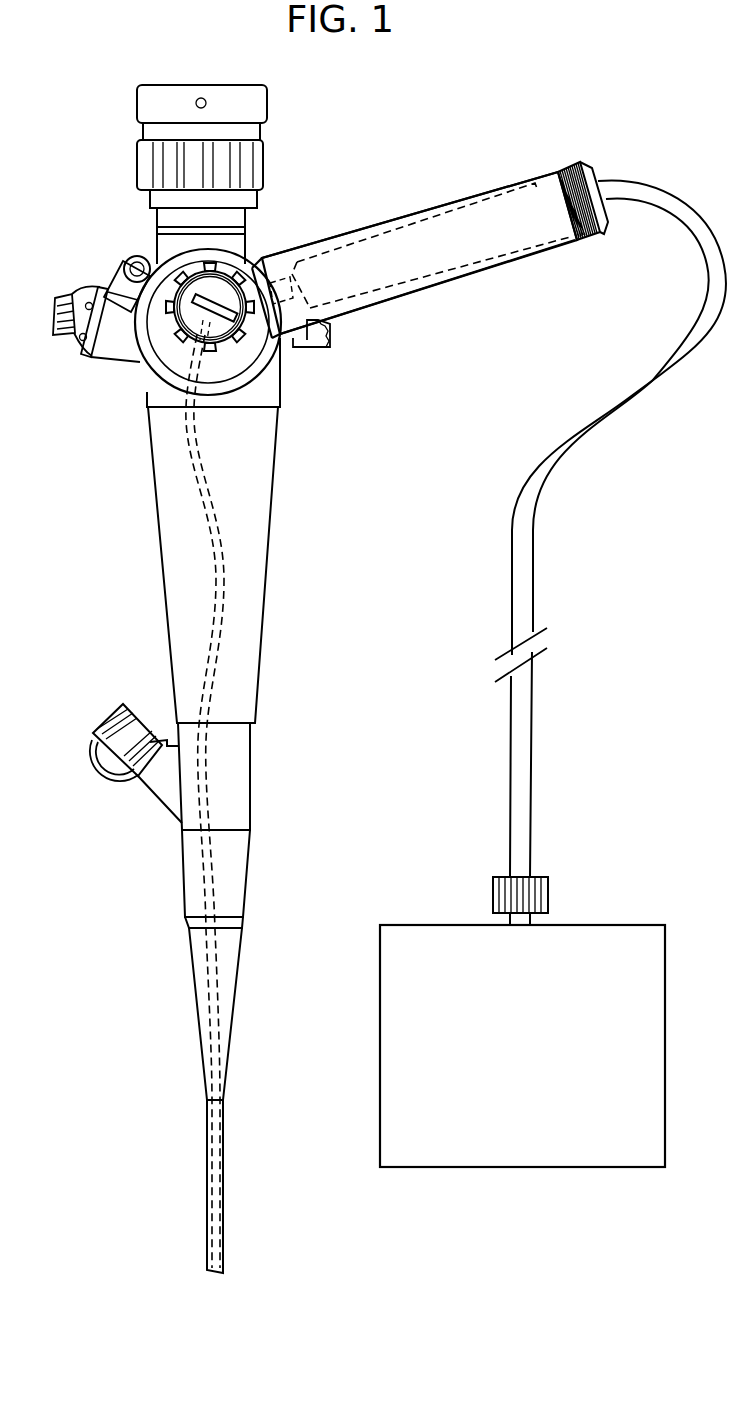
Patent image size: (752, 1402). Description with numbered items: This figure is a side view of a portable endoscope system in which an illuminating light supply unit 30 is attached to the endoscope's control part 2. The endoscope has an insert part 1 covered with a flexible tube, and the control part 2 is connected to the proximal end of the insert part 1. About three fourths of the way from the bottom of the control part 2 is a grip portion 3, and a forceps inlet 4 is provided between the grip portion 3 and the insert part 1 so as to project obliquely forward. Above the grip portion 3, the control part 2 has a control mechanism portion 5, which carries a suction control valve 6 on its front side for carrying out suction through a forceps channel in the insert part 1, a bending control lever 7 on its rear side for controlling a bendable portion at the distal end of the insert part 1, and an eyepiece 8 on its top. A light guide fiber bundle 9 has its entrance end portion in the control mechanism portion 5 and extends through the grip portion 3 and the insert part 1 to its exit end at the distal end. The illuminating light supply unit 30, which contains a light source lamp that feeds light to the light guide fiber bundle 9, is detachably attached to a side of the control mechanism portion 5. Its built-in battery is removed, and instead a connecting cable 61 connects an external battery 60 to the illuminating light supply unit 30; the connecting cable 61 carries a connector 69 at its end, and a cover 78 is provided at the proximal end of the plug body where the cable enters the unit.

The insert part 1 is at (228, 1198).
The control part 2 is at (126, 484).
The grip portion 3 is at (266, 590).
The forceps inlet 4 is at (103, 715).
The control mechanism portion 5 is at (121, 372).
The suction control valve 6 is at (65, 296).
The bending control lever 7 is at (318, 350).
The eyepiece 8 is at (266, 151).
The light guide fiber bundle 9 is at (217, 958).
The illuminating light supply unit 30 is at (363, 213).
The external battery 60 is at (613, 938).
The connecting cable 61 is at (535, 543).
The connector 69 is at (412, 275).
The cover 78 is at (572, 170).